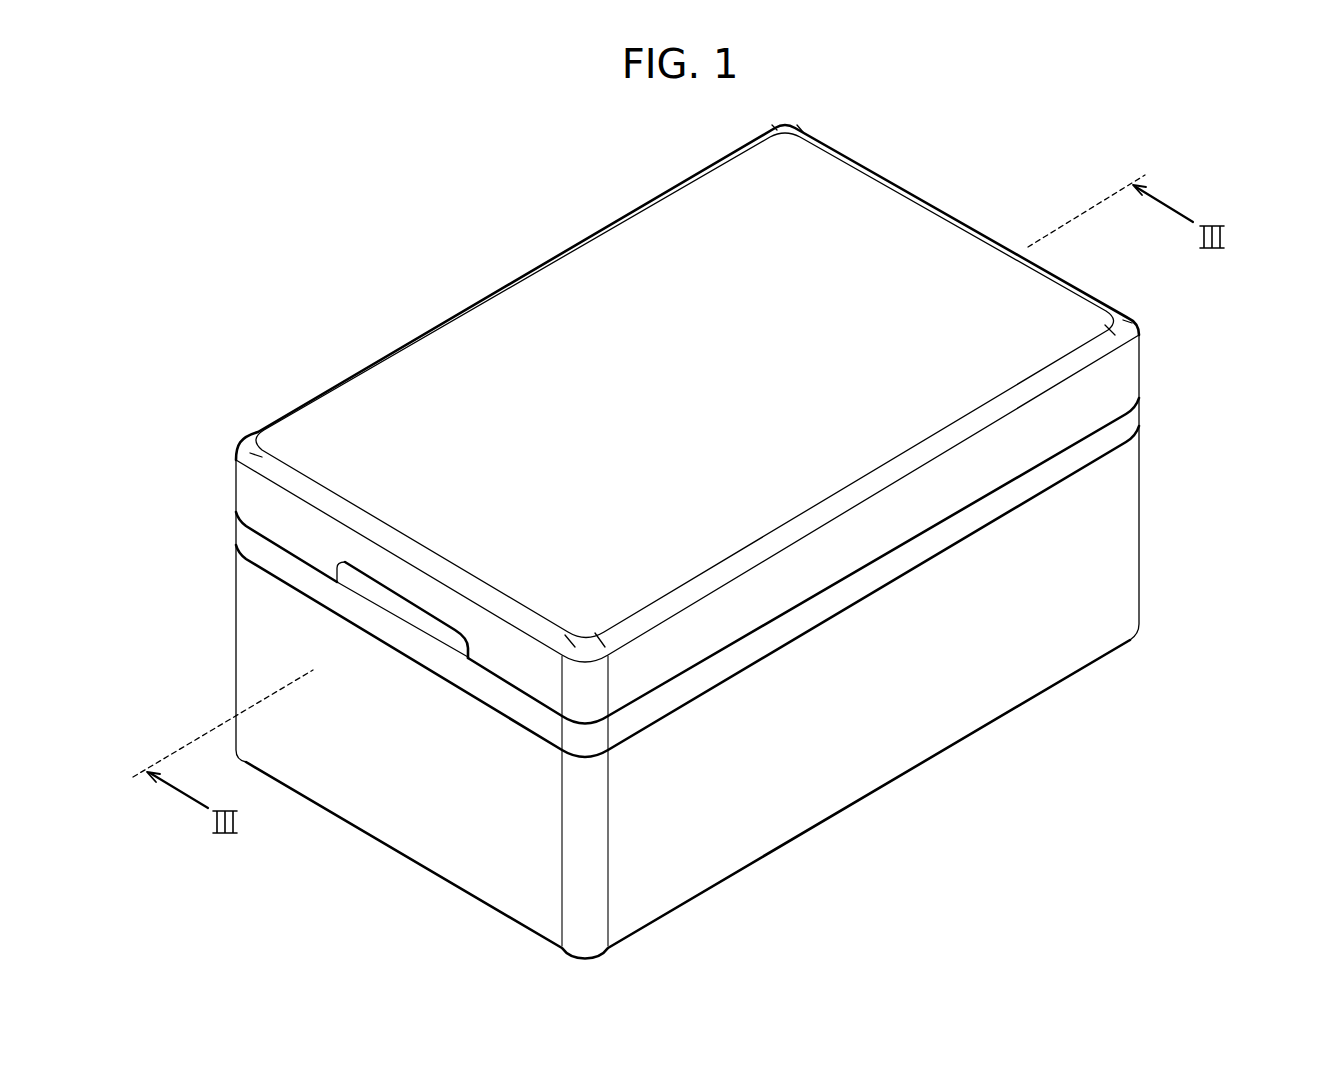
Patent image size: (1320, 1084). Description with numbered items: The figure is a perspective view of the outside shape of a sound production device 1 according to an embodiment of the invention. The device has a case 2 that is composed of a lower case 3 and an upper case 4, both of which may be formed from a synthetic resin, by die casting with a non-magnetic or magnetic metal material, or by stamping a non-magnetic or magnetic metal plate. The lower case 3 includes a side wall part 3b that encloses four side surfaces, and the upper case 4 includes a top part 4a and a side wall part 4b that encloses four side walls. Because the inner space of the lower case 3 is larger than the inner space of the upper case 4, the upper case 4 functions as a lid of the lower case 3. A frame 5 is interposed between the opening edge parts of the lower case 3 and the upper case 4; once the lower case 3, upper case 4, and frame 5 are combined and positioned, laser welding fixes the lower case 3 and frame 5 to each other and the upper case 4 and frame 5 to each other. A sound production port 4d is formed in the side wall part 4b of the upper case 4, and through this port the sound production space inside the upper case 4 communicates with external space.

The sound production device 1 is at (920, 137).
The case 2 is at (1230, 390).
The lower case 3 is at (1113, 492).
The side wall part 3b is at (848, 784).
The upper case 4 is at (1117, 383).
The top part 4a is at (611, 254).
The side wall part 4b is at (990, 463).
The sound production port 4d is at (373, 592).
The frame 5 is at (507, 700).